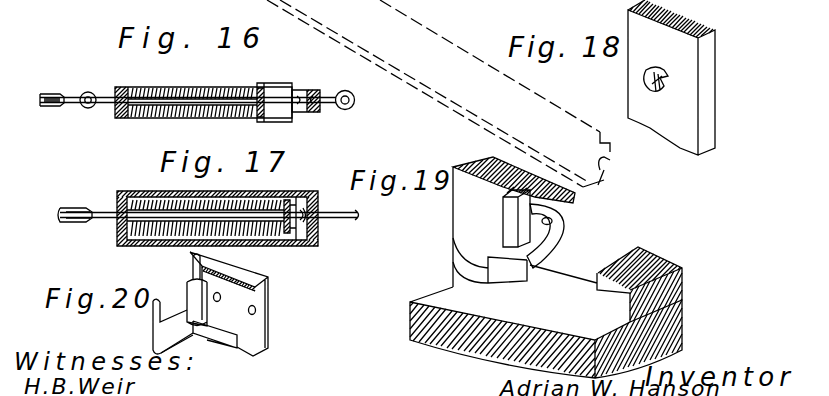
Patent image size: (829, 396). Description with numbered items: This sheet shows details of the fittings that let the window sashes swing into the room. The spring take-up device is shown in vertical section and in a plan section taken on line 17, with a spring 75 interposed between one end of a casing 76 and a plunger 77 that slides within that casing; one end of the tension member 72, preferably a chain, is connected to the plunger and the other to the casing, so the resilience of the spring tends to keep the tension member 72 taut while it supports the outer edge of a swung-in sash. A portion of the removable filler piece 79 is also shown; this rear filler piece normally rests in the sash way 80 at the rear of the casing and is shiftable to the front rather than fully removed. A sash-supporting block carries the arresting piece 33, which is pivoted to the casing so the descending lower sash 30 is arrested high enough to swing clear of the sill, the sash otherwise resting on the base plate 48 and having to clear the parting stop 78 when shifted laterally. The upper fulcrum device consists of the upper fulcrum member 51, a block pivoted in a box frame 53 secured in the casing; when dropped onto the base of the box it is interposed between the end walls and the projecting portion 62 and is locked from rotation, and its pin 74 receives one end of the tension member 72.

In FIG. 16, the section line 17 is at (25, 110).
In FIG. 16, the tension member 72 is at (50, 92).
In FIG. 17, the tension member 72 is at (70, 208).
In FIG. 16, the spring 75 is at (136, 120).
In FIG. 17, the spring 75 is at (138, 240).
In FIG. 16, the casing 76 is at (228, 87).
In FIG. 17, the casing 76 is at (140, 191).
In FIG. 16, the plunger 77 is at (270, 122).
In FIG. 17, the plunger 77 is at (318, 242).
In FIG. 18, the filler piece 79 is at (707, 60).
In FIG. 18, the sash way 80 is at (650, 90).
In FIG. 19, the lower sash 30 is at (432, 31).
In FIG. 19, the base plate 48 is at (470, 328).
In FIG. 19, the parting stop 78 is at (505, 228).
In FIG. 19, the arresting piece 33 is at (533, 263).
In FIG. 20, the box frame 53 is at (268, 308).
In FIG. 20, the pin 74 is at (153, 316).
In FIG. 20, the projecting portion 62 is at (237, 336).
In FIG. 20, the upper fulcrum member 51 is at (167, 335).